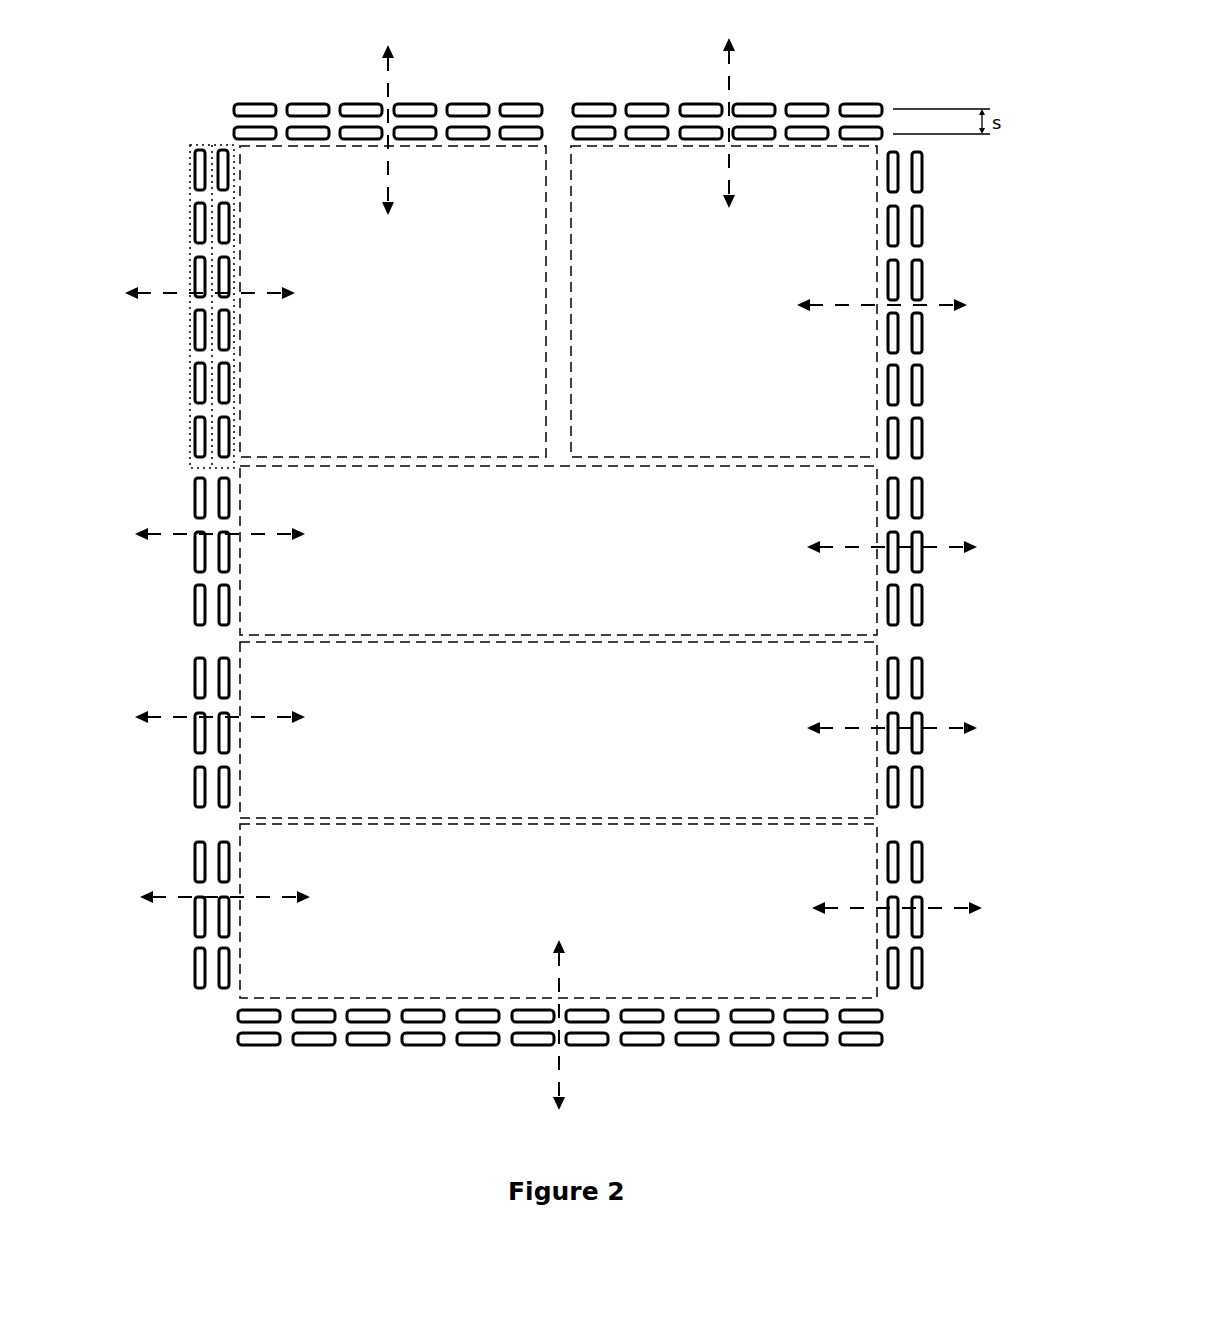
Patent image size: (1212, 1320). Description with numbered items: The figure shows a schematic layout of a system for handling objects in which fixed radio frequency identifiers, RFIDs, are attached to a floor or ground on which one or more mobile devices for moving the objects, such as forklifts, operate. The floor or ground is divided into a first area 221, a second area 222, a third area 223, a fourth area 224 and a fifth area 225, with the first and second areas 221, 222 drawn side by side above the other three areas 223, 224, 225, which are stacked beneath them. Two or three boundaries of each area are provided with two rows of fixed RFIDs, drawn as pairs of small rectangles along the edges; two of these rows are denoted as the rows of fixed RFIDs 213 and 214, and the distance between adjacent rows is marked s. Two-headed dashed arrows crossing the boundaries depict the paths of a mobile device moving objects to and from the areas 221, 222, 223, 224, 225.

The row of fixed radio frequency identifiers 213 is at (198, 143).
The row of fixed radio frequency identifiers 214 is at (224, 143).
The area 221 is at (393, 301).
The area 222 is at (724, 301).
The area 223 is at (558, 550).
The area 224 is at (558, 730).
The area 225 is at (558, 911).